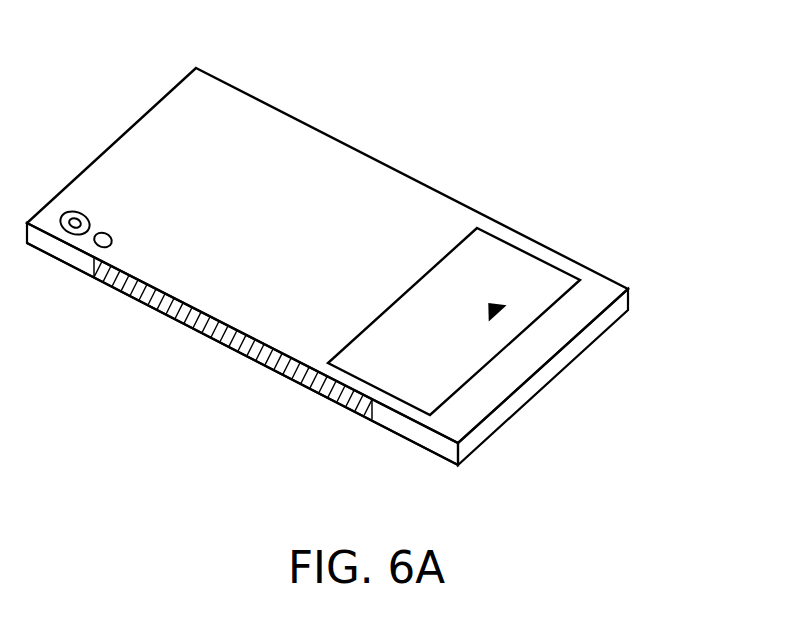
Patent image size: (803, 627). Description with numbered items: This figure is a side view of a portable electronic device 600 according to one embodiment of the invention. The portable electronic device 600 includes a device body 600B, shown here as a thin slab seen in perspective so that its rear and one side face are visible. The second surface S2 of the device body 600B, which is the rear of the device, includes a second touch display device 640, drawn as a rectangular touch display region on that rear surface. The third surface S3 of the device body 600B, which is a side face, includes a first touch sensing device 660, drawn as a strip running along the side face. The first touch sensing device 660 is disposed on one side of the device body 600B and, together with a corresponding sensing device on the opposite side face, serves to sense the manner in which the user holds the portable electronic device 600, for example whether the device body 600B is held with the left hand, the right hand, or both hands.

The portable electronic device 600 is at (374, 249).
The device body 600B is at (374, 238).
The second surface S2 is at (240, 122).
The third surface S3 is at (63, 252).
The second touch display device 640 is at (507, 257).
The first touch sensing device 660 is at (210, 325).